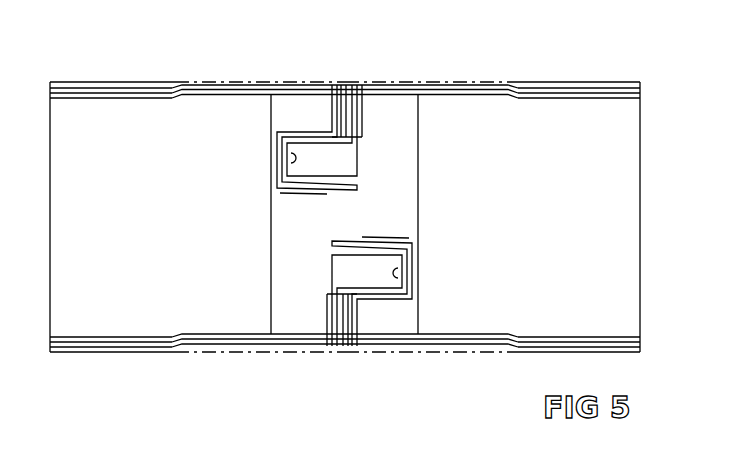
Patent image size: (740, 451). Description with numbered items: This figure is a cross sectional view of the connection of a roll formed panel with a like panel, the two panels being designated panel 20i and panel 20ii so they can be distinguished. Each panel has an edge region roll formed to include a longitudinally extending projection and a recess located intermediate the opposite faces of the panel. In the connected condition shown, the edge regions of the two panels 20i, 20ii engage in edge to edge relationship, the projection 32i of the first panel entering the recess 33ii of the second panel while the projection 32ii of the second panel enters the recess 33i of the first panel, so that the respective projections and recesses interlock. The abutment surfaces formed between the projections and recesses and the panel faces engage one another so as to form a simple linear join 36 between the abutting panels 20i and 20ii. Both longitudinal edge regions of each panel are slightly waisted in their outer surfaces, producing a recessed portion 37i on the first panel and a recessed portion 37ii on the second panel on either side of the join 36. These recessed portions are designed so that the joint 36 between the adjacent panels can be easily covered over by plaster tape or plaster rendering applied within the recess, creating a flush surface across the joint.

The panel 20i is at (80, 112).
The panel 20ii is at (566, 117).
The projection 32i is at (393, 264).
The projection 32ii is at (297, 172).
The recess 33i is at (287, 160).
The recess 33ii is at (402, 275).
The linear join 36 is at (347, 85).
The recessed portion 37i is at (260, 88).
The recessed portion 37ii is at (497, 26).